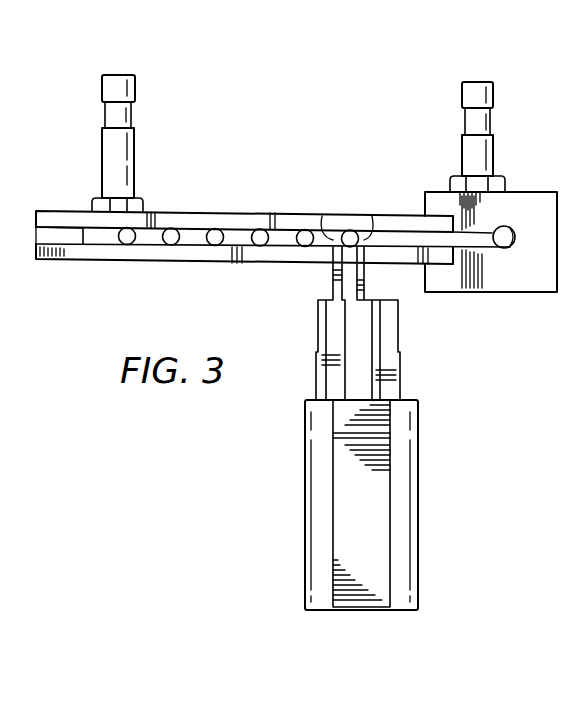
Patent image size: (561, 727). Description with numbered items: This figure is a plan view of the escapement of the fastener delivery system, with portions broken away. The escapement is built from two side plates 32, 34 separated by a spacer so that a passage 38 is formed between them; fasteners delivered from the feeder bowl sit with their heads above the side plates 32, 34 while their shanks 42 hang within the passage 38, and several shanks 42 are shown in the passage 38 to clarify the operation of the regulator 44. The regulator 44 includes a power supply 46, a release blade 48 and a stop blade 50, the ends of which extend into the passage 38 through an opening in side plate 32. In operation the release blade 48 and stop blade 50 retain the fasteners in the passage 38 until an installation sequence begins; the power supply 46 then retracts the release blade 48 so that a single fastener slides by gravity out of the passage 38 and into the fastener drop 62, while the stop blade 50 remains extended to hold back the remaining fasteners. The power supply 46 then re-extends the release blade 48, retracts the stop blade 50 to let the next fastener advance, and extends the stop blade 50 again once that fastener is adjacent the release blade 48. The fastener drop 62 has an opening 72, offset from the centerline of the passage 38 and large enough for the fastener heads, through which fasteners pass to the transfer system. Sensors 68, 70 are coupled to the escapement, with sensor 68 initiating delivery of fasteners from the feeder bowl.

The side plate 32 is at (178, 262).
The side plate 34 is at (60, 211).
The passage 38 is at (103, 238).
The shanks 42 is at (188, 228).
The regulator 44 is at (375, 633).
The power supply 46 is at (305, 500).
The release blade 48 is at (366, 232).
The stop blade 50 is at (322, 230).
The fastener drop 62 is at (522, 192).
The sensor 68 is at (116, 75).
The sensor 70 is at (478, 82).
The opening 72 is at (510, 248).